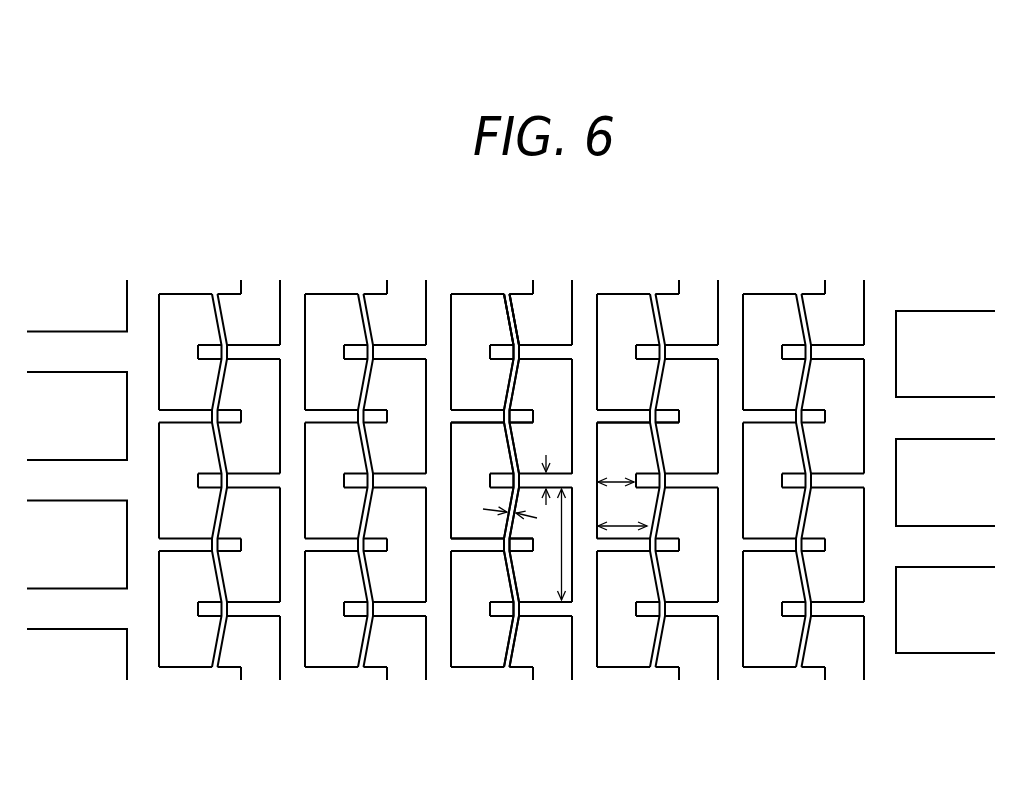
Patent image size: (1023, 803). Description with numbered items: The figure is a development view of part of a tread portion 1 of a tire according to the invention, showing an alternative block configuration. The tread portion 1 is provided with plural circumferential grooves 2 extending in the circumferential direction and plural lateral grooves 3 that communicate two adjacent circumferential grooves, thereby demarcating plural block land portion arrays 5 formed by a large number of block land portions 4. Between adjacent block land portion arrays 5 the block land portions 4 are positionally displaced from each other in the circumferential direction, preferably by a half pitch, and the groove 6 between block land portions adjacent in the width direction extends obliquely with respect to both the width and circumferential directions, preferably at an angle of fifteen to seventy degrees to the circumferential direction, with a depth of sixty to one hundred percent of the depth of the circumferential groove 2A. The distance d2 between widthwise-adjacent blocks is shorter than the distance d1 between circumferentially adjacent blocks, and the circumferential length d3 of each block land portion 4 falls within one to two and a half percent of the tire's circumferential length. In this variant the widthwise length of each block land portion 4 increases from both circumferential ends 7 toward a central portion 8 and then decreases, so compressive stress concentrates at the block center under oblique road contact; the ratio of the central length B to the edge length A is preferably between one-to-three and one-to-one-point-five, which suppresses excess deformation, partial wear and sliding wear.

The tread portion 1 is at (742, 251).
The circumferential groove 2 is at (505, 291).
The circumferential groove 2A is at (440, 316).
The lateral groove 3 is at (472, 415).
The block land portion 4 is at (490, 336).
The block land portion array 5 is at (468, 673).
The groove between block land portions adjacent in the width direction 6 is at (507, 669).
The end of the block land portion in the circumferential direction 7 is at (625, 294).
The central portion of the block land portion 8 is at (597, 350).
The distance between circumferentially adjacent block land portions d1 is at (547, 480).
The distance between widthwise adjacent block land portions d2 is at (503, 513).
The length of the block land portion in the circumferential direction d3 is at (551, 544).
The length of the circumferential edge portion of the block land portion in the widt A is at (622, 512).
The length of the central portion of the block land portion in the width direction B is at (616, 466).